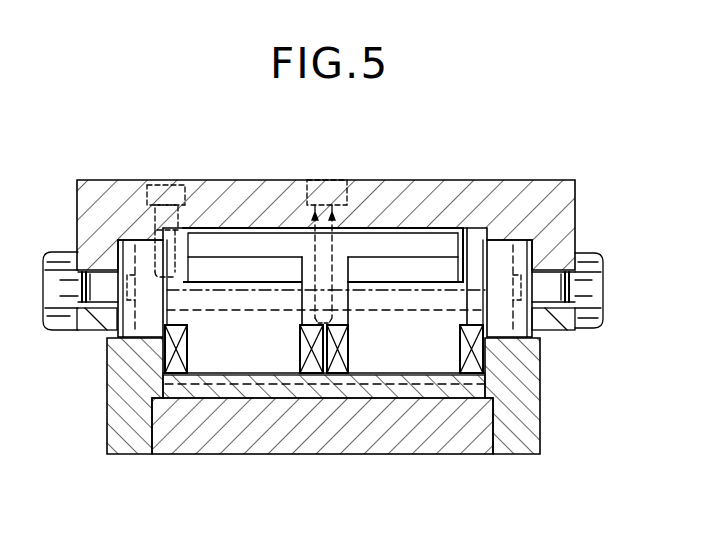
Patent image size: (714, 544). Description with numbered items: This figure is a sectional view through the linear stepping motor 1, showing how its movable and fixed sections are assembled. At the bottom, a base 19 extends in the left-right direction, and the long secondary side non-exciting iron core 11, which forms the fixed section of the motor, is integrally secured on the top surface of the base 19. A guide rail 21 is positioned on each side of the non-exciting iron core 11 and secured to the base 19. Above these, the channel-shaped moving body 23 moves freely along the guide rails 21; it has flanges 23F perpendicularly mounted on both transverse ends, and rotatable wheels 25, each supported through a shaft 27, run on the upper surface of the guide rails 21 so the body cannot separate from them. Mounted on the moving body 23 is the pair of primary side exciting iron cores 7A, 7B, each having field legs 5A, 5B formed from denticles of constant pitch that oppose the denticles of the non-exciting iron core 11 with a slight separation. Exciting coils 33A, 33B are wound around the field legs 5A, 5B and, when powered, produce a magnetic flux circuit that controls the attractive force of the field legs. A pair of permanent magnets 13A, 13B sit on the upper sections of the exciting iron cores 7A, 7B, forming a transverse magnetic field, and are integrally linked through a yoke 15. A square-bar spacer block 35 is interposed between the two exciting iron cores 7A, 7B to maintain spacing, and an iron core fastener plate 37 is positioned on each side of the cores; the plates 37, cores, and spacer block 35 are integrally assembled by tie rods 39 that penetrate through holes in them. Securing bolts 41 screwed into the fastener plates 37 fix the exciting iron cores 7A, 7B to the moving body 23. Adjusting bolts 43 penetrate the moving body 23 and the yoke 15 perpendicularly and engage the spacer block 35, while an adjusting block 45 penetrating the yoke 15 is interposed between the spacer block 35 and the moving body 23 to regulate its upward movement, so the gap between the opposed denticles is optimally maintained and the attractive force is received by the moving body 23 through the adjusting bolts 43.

The linear stepping motor 1 is at (586, 172).
The field leg 5A is at (415, 362).
The field leg 5B is at (252, 362).
The primary side exciting iron core 7A is at (446, 304).
The primary side exciting iron core 7B is at (240, 275).
The secondary side non-exciting iron core 11 is at (378, 397).
The permanent magnet 13A is at (477, 247).
The permanent magnet 13B is at (283, 267).
The yoke 15 is at (263, 240).
The base 19 is at (447, 443).
The guide rail 21 is at (133, 442).
The moving body 23 is at (475, 179).
The flange 23F is at (95, 318).
The rotatable wheel 25 is at (137, 333).
The shaft 27 is at (88, 285).
The exciting coil 33A is at (480, 340).
The exciting coil 33B is at (312, 365).
The spacer block 35 is at (346, 322).
The iron core fastener plate 37 is at (136, 272).
The tie rod 39 is at (215, 320).
The securing bolt 41 is at (170, 184).
The adjusting bolt 43 is at (347, 213).
The adjusting block 45 is at (348, 248).